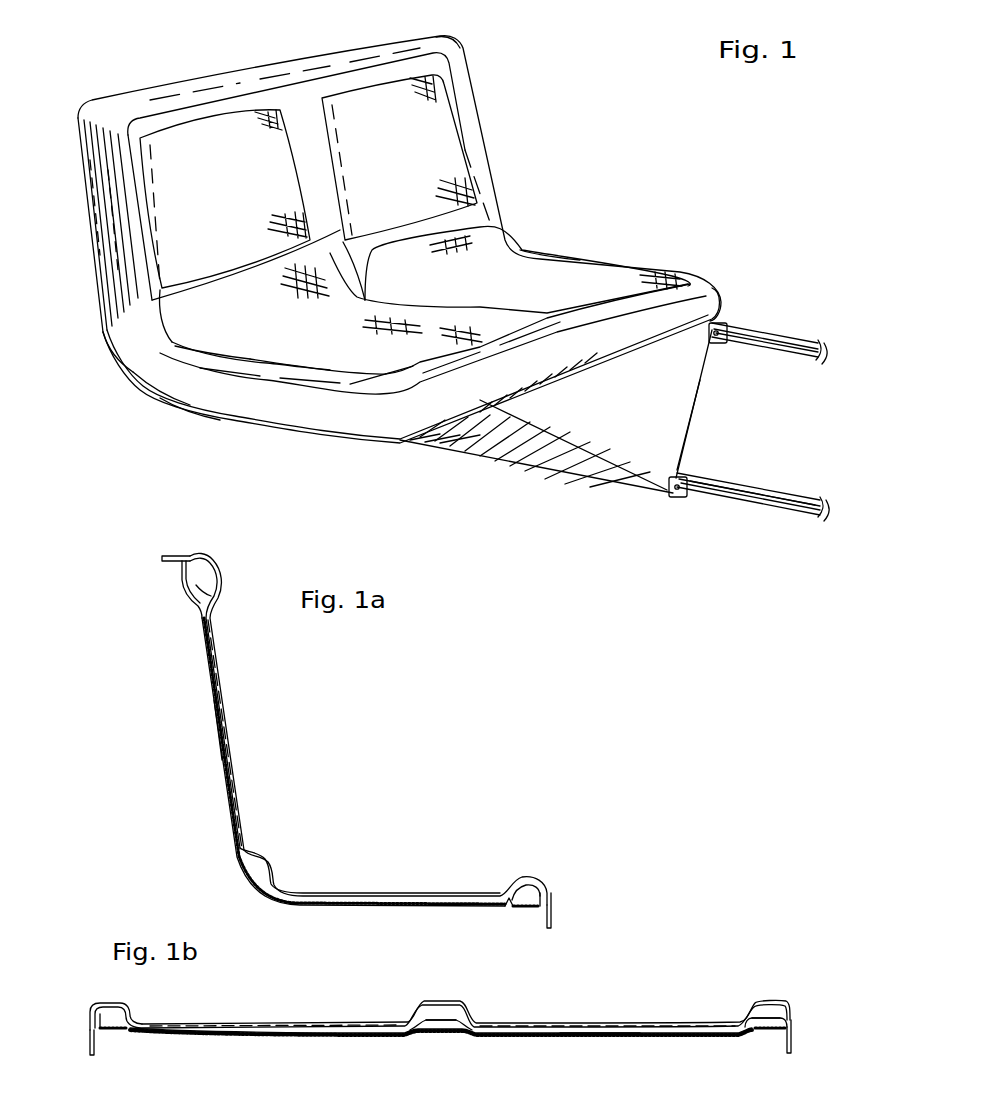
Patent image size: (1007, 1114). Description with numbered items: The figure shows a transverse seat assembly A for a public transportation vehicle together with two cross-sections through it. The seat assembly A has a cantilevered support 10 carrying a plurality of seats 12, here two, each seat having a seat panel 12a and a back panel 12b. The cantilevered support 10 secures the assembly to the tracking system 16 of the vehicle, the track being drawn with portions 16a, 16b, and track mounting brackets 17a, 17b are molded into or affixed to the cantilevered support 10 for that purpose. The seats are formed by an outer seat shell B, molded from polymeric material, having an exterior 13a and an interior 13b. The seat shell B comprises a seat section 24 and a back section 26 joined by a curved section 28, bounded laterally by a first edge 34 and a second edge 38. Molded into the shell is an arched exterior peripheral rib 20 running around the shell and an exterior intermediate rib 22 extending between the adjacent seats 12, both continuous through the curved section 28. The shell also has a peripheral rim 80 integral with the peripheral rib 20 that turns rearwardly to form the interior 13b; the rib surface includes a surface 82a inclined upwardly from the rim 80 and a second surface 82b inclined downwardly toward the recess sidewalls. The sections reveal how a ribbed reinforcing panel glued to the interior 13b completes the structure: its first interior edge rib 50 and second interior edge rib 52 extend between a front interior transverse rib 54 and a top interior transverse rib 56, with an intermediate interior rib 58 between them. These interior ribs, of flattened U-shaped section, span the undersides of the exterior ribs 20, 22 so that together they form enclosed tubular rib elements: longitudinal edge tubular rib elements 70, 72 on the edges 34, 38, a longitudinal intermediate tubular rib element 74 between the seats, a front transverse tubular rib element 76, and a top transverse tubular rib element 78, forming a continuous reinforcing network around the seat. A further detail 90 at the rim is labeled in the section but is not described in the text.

In FIG. 1, the cantilevered support 10 is at (548, 455).
In FIG. 1, the seats 12 is at (210, 325).
In FIG. 1, the seat panel 12a is at (370, 356).
In FIG. 1, the back panel 12b is at (254, 196).
In FIG. 1A, the exterior 13a is at (236, 765).
In FIG. 1B, the exterior 13a is at (262, 1025).
In FIG. 1A, the interior 13b is at (229, 780).
In FIG. 1B, the interior 13b is at (258, 1040).
In FIG. 1, the tracking system 16 is at (745, 505).
In FIG. 1, the lower mounting rail 16a is at (720, 483).
In FIG. 1, the upper mounting rail 16b is at (760, 328).
In FIG. 1, the track mounting bracket 17a is at (680, 497).
In FIG. 1, the track mounting bracket 17b is at (727, 340).
In FIG. 1, the exterior peripheral rib 20 is at (262, 93).
In FIG. 1A, the exterior peripheral rib 20 is at (218, 565).
In FIG. 1B, the exterior peripheral rib 20 is at (100, 1004).
In FIG. 1, the exterior intermediate rib 22 is at (362, 298).
In FIG. 1B, the exterior intermediate rib 22 is at (442, 1001).
In FIG. 1, the seat section 24 is at (243, 417).
In FIG. 1, the back section 26 is at (457, 77).
In FIG. 1, the curved section 28 is at (133, 368).
In FIG. 1, the first edge 34 is at (165, 397).
In FIG. 1, the second edge 38 is at (545, 257).
In FIG. 1B, the first interior edge rib 50 is at (113, 1032).
In FIG. 1B, the second interior edge rib 52 is at (775, 1033).
In FIG. 1A, the front interior transverse rib 54 is at (521, 912).
In FIG. 1A, the top interior transverse rib 56 is at (176, 577).
In FIG. 1B, the intermediate interior rib 58 is at (425, 1033).
In FIG. 1A, the longitudinal edge tubular rib element 70 is at (222, 700).
In FIG. 1B, the longitudinal edge tubular rib element 70 is at (107, 1015).
In FIG. 1B, the longitudinal edge tubular rib element 72 is at (772, 1018).
In FIG. 1B, the longitudinal intermediate tubular rib element 74 is at (440, 1022).
In FIG. 1A, the front transverse tubular rib element 76 is at (520, 901).
In FIG. 1B, the front transverse tubular rib element 76 is at (600, 1036).
In FIG. 1A, the top transverse tubular rib element 78 is at (203, 577).
In FIG. 1, the peripheral rim 80 is at (160, 93).
In FIG. 1A, the peripheral rim 80 is at (173, 555).
In FIG. 1B, the peripheral rim 80 is at (88, 1045).
In FIG. 1, the surface 82a is at (192, 360).
In FIG. 1, the second surface 82b is at (255, 360).
In FIG. 1A, the rim lip 90 is at (545, 890).
In FIG. 1, the seat assembly A is at (182, 417).
In FIG. 1, the outer seat shell B is at (490, 167).